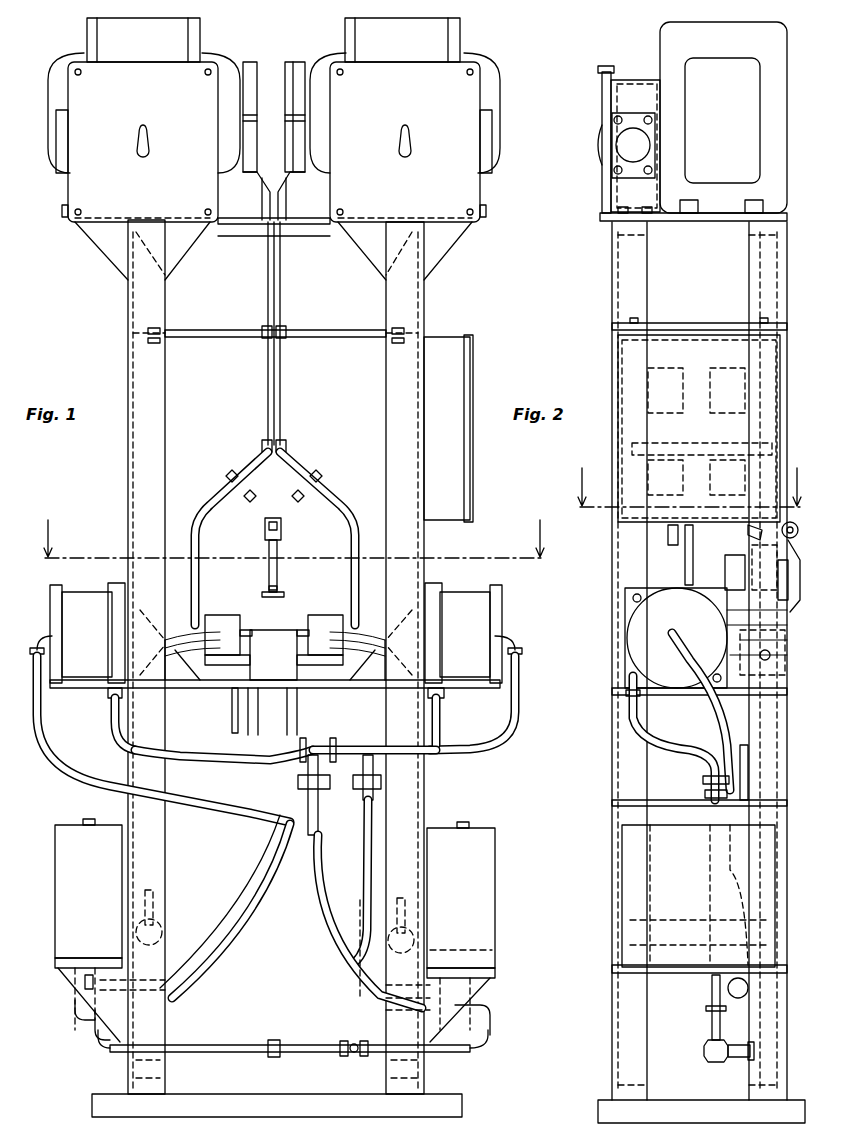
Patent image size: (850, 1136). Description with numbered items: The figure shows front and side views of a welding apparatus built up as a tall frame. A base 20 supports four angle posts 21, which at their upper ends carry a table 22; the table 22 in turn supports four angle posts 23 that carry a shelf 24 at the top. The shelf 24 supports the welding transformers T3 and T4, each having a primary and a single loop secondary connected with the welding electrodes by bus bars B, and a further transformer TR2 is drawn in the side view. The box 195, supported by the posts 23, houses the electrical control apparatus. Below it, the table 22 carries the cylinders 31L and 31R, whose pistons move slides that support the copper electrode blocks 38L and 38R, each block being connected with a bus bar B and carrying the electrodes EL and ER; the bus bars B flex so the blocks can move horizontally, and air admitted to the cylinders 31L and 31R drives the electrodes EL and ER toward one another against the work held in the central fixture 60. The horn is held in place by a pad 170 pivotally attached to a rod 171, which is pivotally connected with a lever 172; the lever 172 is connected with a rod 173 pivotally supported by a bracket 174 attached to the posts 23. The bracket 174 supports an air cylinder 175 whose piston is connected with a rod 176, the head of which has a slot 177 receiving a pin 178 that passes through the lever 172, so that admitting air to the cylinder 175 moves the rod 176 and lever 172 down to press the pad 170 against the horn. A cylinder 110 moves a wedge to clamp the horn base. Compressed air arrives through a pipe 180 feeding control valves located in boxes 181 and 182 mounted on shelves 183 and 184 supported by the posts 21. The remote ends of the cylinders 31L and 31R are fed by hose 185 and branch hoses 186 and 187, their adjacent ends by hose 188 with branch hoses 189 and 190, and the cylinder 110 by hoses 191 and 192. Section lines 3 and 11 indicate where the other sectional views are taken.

In FIG. 1, the base 20 is at (478, 1096).
In FIG. 2, the base 20 is at (598, 1100).
In FIG. 1, the angle posts 21 is at (166, 850).
In FIG. 2, the angle posts 21 is at (647, 1077).
In FIG. 1, the table 22 is at (343, 689).
In FIG. 2, the table 22 is at (612, 690).
In FIG. 1, the angle posts 23 is at (128, 449).
In FIG. 2, the angle posts 23 is at (612, 308).
In FIG. 1, the shelf 24 is at (252, 238).
In FIG. 2, the shelf 24 is at (695, 221).
In FIG. 1, the welding transformer T3 is at (68, 192).
In FIG. 1, the welding transformer T4 is at (480, 192).
In FIG. 2, the transformer TR2 is at (660, 36).
In FIG. 1, the bus bars B is at (262, 180).
In FIG. 1, the box 195 is at (455, 337).
In FIG. 2, the box 195 is at (618, 357).
In FIG. 1, the lever 172 is at (281, 529).
In FIG. 2, the lever 172 is at (668, 536).
In FIG. 1, the rod 171 is at (269, 555).
In FIG. 2, the rod 171 is at (693, 561).
In FIG. 1, the pad 170 is at (262, 592).
In FIG. 2, the pad 170 is at (684, 598).
In FIG. 1, the electrode EL is at (250, 630).
In FIG. 1, the electrode ER is at (302, 630).
In FIG. 1, the copper electrode block 38L is at (222, 655).
In FIG. 1, the copper electrode block 38R is at (322, 655).
In FIG. 1, the central housing 60 is at (275, 690).
In FIG. 1, the cylinder 110 is at (232, 715).
In FIG. 2, the cylinder 110 is at (703, 782).
In FIG. 1, the cylinder 31L is at (100, 590).
In FIG. 1, the cylinder 31R is at (458, 585).
In FIG. 2, the cylinder 31R is at (627, 645).
In FIG. 1, the branch hose 186 is at (72, 783).
In FIG. 1, the branch hose 187 is at (478, 745).
In FIG. 2, the branch hose 187 is at (698, 705).
In FIG. 1, the branch hose 189 is at (230, 755).
In FIG. 1, the branch hose 190 is at (366, 738).
In FIG. 2, the branch hose 190 is at (648, 740).
In FIG. 1, the hose 185 is at (365, 888).
In FIG. 1, the hose 188 is at (345, 965).
In FIG. 1, the hose 191 is at (232, 910).
In FIG. 1, the hose 192 is at (252, 928).
In FIG. 1, the box 181 is at (55, 873).
In FIG. 1, the box 182 is at (495, 884).
In FIG. 2, the box 182 is at (622, 855).
In FIG. 1, the shelf 183 is at (64, 992).
In FIG. 1, the shelf 184 is at (480, 1010).
In FIG. 1, the pipe 180 is at (252, 1045).
In FIG. 2, the pipe 180 is at (708, 1035).
In FIG. 1, the section line 3- 3 is at (287, 553).
In FIG. 2, the section line 11- 11 is at (690, 488).
In FIG. 2, the rod 173 is at (792, 590).
In FIG. 2, the bracket 174 is at (776, 580).
In FIG. 2, the air cylinder 175 is at (725, 575).
In FIG. 2, the rod 176 is at (775, 563).
In FIG. 2, the slot 177 is at (780, 526).
In FIG. 2, the pin 178 is at (748, 532).